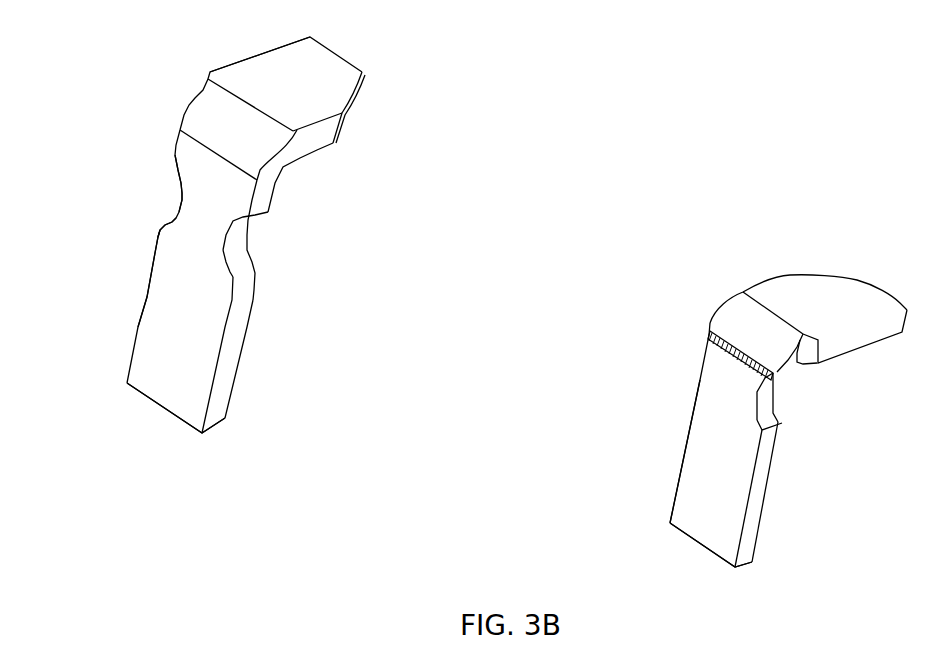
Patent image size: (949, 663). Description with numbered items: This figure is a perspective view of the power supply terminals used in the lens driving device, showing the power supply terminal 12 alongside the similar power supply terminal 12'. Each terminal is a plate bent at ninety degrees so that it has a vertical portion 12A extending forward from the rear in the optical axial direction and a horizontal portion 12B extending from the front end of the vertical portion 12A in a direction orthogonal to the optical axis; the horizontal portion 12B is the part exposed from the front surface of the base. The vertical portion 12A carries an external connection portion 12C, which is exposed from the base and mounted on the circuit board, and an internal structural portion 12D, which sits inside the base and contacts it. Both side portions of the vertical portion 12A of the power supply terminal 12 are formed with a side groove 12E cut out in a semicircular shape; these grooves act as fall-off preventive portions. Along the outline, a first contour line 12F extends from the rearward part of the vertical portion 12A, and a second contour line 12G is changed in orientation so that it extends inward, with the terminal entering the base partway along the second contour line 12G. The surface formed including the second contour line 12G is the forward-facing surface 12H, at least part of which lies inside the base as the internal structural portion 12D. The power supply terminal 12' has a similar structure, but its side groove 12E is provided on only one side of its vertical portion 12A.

The power supply terminal 12 is at (216, 235).
The power supply terminal 12' is at (778, 401).
The vertical portion 12A is at (187, 380).
The horizontal portion 12B is at (338, 76).
The external connection portion 12C is at (160, 390).
The internal structural portion 12D is at (242, 193).
The side groove 12E is at (177, 182).
The first contour line 12F is at (138, 332).
The second contour line 12G is at (227, 267).
The forward-facing surface 12H is at (170, 222).